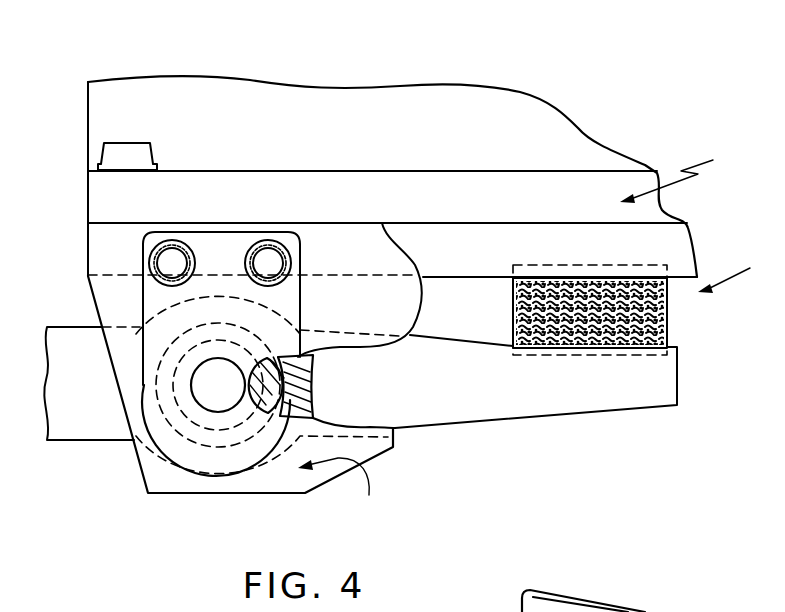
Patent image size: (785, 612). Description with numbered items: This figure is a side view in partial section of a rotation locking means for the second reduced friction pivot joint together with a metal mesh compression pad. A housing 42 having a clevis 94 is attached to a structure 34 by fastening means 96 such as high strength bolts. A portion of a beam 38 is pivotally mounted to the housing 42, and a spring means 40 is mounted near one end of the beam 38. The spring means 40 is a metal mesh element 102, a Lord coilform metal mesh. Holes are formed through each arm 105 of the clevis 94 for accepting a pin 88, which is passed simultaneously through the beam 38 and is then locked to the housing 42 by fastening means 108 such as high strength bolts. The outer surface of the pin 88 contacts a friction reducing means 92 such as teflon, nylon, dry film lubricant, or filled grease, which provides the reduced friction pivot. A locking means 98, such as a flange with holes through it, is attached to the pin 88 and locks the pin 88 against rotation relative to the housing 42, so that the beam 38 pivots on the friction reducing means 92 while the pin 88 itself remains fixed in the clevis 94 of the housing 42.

The structure 34 is at (520, 118).
The housing 42 is at (523, 333).
The spring means 40 is at (740, 271).
The fastening means 96 is at (153, 153).
The locking means 98 is at (158, 300).
The arm 105 is at (157, 462).
The fastening means 108 is at (172, 262).
The clevis 94 is at (170, 487).
The beam 38 is at (70, 420).
The friction reducing means 92 is at (315, 398).
The pin 88 is at (315, 377).
The metal mesh element 102 is at (670, 320).